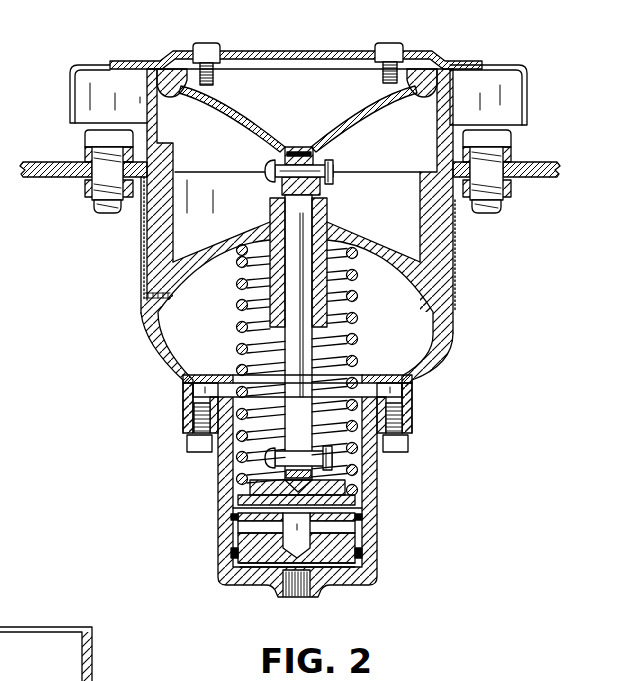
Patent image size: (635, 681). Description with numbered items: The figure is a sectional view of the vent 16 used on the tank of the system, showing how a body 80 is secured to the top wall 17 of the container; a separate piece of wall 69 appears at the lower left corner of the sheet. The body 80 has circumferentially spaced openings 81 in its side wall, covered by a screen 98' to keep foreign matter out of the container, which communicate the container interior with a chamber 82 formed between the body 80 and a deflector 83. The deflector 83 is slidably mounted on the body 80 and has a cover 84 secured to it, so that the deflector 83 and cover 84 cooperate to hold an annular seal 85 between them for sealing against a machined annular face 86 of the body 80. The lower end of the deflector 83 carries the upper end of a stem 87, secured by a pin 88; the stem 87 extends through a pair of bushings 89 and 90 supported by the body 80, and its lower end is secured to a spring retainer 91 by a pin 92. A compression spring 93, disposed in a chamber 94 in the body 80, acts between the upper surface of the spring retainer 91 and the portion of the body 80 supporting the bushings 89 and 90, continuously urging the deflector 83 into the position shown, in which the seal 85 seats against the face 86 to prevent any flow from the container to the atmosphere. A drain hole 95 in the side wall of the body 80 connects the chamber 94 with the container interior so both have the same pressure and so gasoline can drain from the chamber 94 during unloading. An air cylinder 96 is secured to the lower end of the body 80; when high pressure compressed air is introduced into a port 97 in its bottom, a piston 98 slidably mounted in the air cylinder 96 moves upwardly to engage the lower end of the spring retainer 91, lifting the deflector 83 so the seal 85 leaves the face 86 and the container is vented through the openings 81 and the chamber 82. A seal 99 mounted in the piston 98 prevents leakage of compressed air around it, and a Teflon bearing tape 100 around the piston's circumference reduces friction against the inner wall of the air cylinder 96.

The vent 16 is at (110, 397).
The top wall 17 is at (52, 161).
The housing wall 69 is at (81, 660).
The body 80 is at (146, 332).
The openings 81 is at (456, 275).
The chamber 82 is at (389, 200).
The deflector 83 is at (352, 118).
The cover 84 is at (528, 100).
The annular seal 85 is at (171, 92).
The machined annular face 86 is at (437, 57).
The stem 87 is at (304, 345).
The pin 88 is at (277, 180).
The bushing 89 is at (322, 231).
The bushing 90 is at (318, 310).
The spring retainer 91 is at (352, 500).
The pin 92 is at (306, 458).
The compression spring 93 is at (236, 349).
The chamber 94 is at (210, 318).
The drain hole 95 is at (183, 398).
The air cylinder 96 is at (379, 560).
The port 97 is at (298, 598).
The piston 98 is at (313, 588).
The screen 98' is at (273, 245).
The seal 99 is at (231, 553).
The Teflon bearing tape 100 is at (236, 527).